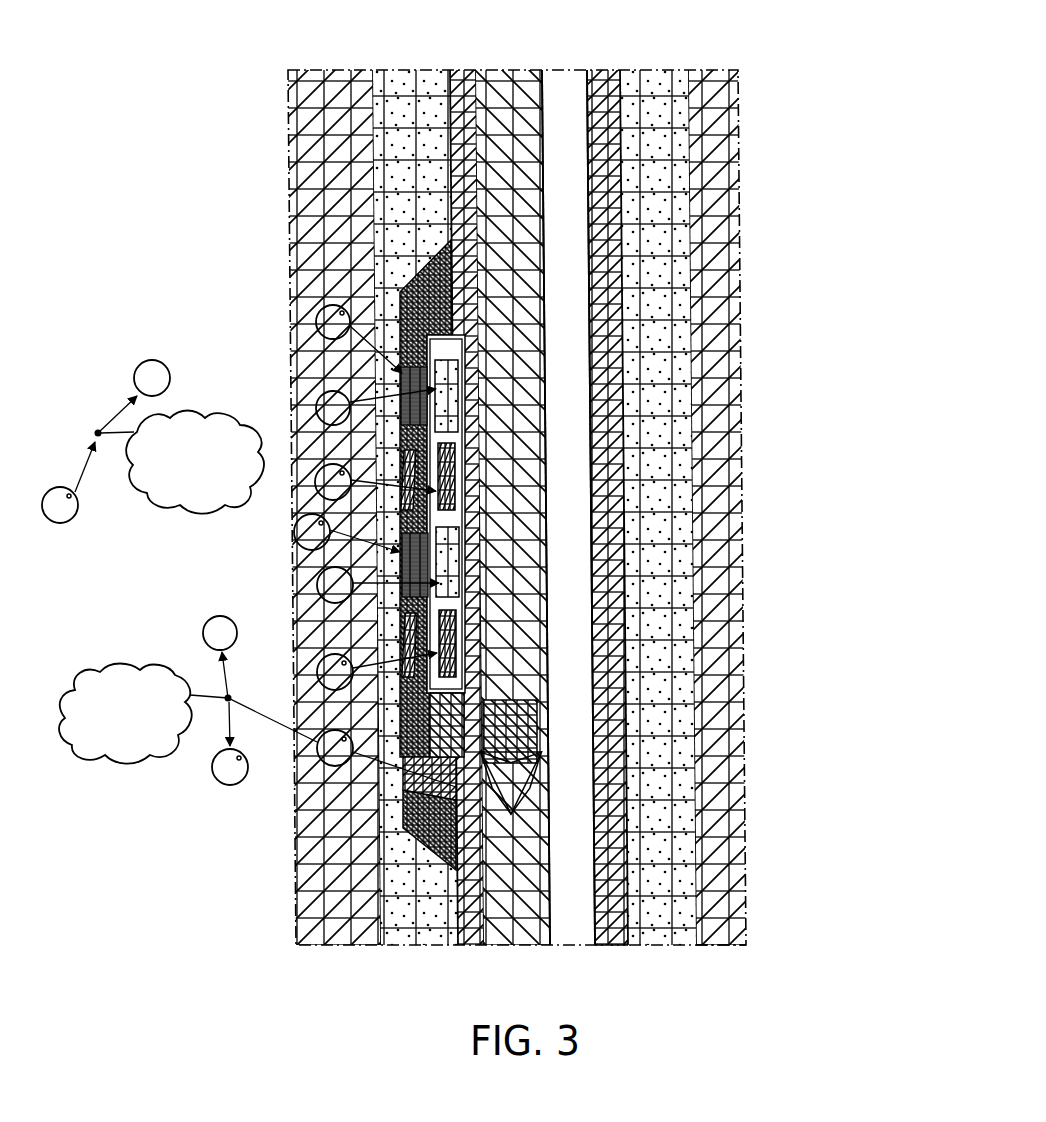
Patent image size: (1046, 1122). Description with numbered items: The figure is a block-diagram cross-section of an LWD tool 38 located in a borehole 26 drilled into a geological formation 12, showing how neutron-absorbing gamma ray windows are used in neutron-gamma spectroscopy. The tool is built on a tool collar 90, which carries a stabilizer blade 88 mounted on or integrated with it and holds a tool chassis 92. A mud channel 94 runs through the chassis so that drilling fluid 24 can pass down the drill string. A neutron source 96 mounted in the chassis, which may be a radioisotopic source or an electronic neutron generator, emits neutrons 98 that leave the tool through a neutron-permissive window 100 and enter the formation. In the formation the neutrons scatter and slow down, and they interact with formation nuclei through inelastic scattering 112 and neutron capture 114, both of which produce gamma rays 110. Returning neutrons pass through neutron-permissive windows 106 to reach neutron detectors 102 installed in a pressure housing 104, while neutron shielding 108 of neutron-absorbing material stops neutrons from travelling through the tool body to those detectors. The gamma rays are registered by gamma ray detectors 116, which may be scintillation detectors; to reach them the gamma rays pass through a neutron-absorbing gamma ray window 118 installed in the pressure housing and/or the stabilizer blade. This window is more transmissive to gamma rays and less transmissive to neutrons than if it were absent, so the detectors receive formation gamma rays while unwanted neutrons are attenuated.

The geological formation 12 is at (352, 920).
The drilling fluid 24 is at (427, 916).
The borehole 26 is at (700, 952).
The LWD tool 38 is at (599, 952).
The stabilizer blade 88 is at (410, 300).
The tool collar 90 is at (463, 93).
The tool chassis 92 is at (508, 113).
The mud channel 94 is at (563, 96).
The neutron source 96 is at (520, 815).
The neutrons 98 is at (316, 326).
The neutron-permissive window 100 is at (405, 818).
The neutron detectors 102 is at (447, 480).
The pressure housing 104 is at (400, 335).
The neutron-permissive windows 106 is at (405, 458).
The neutron shielding 108 is at (452, 707).
The gamma rays 110 is at (318, 403).
The inelastic scattering 112 is at (87, 757).
The neutron capture 114 is at (157, 493).
The gamma ray detectors 116 is at (447, 402).
The neutron-absorbing gamma ray window 118 is at (406, 372).